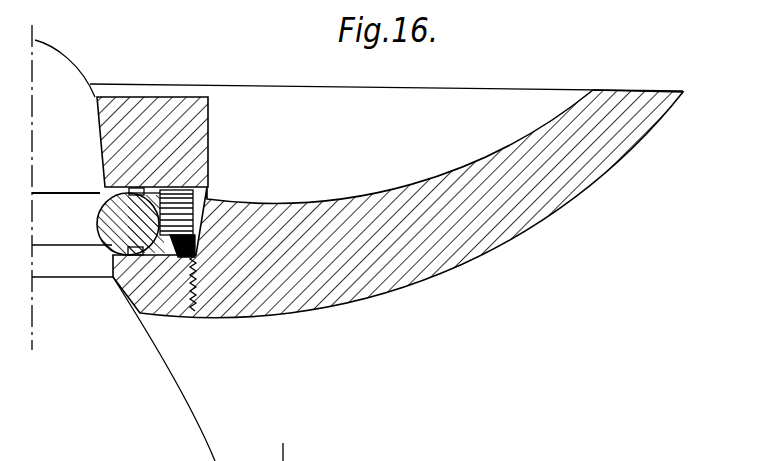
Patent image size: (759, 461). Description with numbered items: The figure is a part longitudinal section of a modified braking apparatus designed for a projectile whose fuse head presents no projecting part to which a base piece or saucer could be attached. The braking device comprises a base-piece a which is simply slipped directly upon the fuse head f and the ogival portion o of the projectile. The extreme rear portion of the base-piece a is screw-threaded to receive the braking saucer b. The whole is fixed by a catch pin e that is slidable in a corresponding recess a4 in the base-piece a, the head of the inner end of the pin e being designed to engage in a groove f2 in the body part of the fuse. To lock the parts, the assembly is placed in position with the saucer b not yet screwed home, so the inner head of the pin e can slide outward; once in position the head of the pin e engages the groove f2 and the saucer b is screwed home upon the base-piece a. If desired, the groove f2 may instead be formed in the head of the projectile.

The fuse head f is at (58, 73).
The groove f2 is at (77, 223).
The base-piece a is at (135, 188).
The recess a4 is at (150, 187).
The braking saucer b is at (432, 242).
The catch pin e is at (140, 227).
The ogival portion o is at (182, 436).